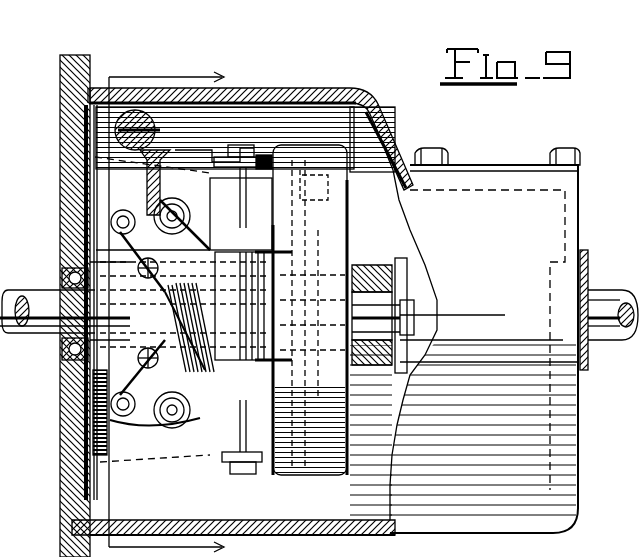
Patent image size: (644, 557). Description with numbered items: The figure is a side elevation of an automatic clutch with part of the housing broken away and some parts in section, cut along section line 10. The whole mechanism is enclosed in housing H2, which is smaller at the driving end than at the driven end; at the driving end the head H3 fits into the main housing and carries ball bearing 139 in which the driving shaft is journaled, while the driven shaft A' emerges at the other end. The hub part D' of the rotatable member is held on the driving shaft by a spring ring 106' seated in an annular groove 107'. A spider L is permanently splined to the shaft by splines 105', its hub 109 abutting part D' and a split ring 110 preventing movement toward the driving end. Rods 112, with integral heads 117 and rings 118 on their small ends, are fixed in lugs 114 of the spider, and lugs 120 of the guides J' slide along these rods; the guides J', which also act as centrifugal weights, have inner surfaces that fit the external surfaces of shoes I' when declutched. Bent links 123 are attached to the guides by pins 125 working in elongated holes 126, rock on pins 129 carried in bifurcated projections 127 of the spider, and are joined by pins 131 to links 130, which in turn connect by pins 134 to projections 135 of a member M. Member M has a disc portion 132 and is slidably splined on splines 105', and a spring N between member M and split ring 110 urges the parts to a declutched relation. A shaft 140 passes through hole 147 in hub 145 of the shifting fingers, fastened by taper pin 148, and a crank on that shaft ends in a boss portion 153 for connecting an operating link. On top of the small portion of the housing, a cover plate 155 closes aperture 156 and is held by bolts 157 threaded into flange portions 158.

The section line 10- 10 is at (188, 310).
The hub 145 is at (88, 142).
The hole 147 is at (296, 538).
The shaft 140 is at (84, 100).
The taper pin 148 is at (88, 124).
The pins 125 is at (62, 150).
The bolts 157 is at (430, 148).
The flange portions 158 is at (440, 185).
The cover plate 155 is at (462, 170).
The aperture 156 is at (492, 180).
The bifurcated projections 127 is at (70, 278).
The ball bearing 139 is at (78, 349).
The disc portion 132 is at (96, 420).
The splines 105' is at (160, 293).
The bent links 123 is at (112, 212).
The pins 129 is at (155, 208).
The pins 131 is at (140, 262).
The links 130 is at (120, 240).
The pins 134 is at (120, 275).
The projections 135 is at (48, 378).
The elongated holes 126 is at (258, 160).
The heads 117 is at (262, 172).
The rings 118 is at (262, 462).
The lugs 120 is at (160, 205).
The hub 109 is at (301, 310).
The split ring 110 is at (292, 161).
The rods 112 is at (322, 462).
The lugs 114 is at (352, 455).
The spring ring 106' is at (424, 298).
The annular groove 107' is at (435, 290).
The boss portion 153 is at (0, 25).
The housing H2 is at (97, 96).
The head H3 is at (70, 488).
The driven shaft A' is at (609, 311).
The member M is at (60, 292).
The spring N is at (168, 361).
The guides J' is at (180, 281).
The shoes I' is at (336, 323).
The part of rotatable member D' is at (376, 294).
The spider L is at (283, 191).